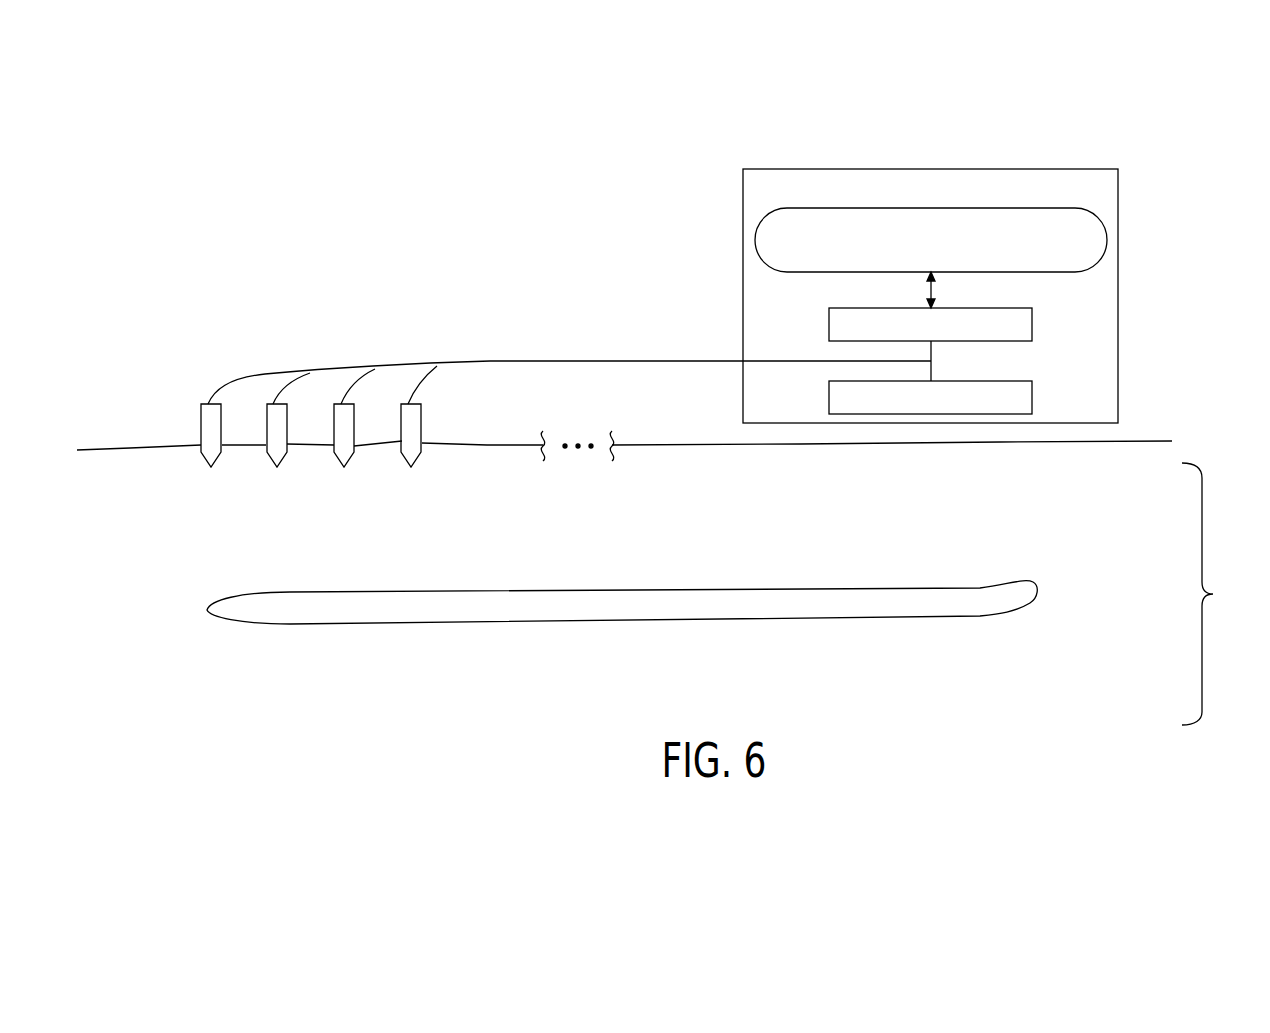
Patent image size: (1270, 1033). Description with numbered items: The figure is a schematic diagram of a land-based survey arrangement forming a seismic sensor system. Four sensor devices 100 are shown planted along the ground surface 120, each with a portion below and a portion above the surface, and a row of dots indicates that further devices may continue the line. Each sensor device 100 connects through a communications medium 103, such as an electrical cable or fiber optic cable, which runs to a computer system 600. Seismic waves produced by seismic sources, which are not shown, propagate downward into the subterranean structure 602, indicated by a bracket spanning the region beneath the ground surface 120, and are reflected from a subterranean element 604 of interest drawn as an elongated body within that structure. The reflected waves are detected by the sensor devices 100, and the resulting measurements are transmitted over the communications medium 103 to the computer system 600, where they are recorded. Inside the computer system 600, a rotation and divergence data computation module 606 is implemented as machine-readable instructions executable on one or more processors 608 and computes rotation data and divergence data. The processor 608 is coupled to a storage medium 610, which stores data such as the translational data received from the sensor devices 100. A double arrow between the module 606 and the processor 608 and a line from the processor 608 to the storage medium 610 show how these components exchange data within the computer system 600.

The sensor device 100 is at (207, 463).
The communications medium 103 is at (469, 361).
The ground surface 120 is at (138, 445).
The computer system 600 is at (957, 269).
The subterranean structure 602 is at (1213, 594).
The subterranean element 604 is at (687, 625).
The rotation and divergence data computation module 606 is at (1100, 213).
The processor 608 is at (1033, 327).
The storage medium 610 is at (1033, 398).